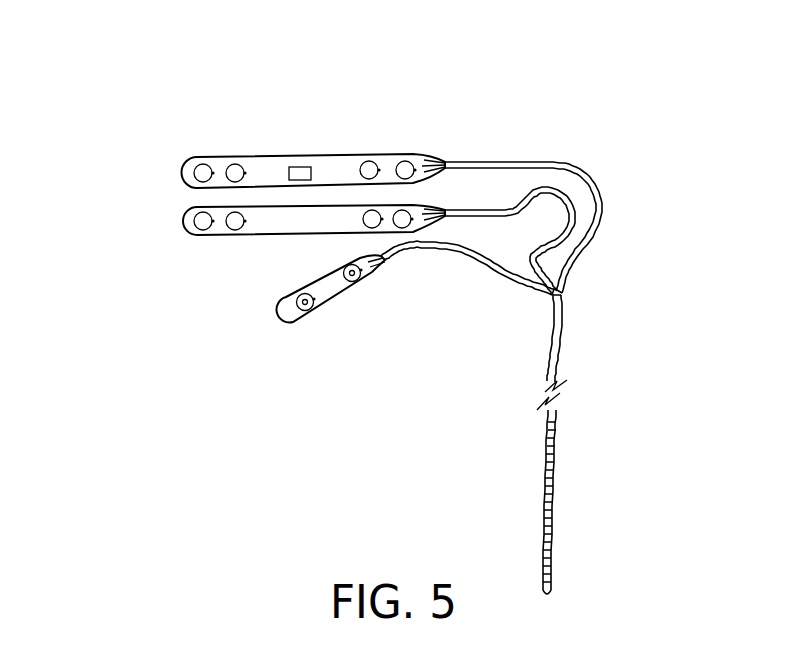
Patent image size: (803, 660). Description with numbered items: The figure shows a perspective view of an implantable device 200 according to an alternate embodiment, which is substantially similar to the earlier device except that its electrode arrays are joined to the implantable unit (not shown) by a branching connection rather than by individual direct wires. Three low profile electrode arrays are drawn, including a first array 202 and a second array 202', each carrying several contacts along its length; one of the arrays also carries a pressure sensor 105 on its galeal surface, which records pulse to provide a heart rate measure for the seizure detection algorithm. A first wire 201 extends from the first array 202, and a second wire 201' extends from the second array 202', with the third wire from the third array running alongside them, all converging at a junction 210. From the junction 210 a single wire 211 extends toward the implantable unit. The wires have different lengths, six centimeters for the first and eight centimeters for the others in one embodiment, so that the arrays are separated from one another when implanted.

The device 200 is at (146, 92).
The pressure sensor 105 is at (300, 167).
The first wire 201 is at (467, 307).
The second wire 201' is at (510, 273).
The first array 202 is at (295, 317).
The second array 202' is at (267, 221).
The junction 210 is at (563, 292).
The single wire 211 is at (558, 367).